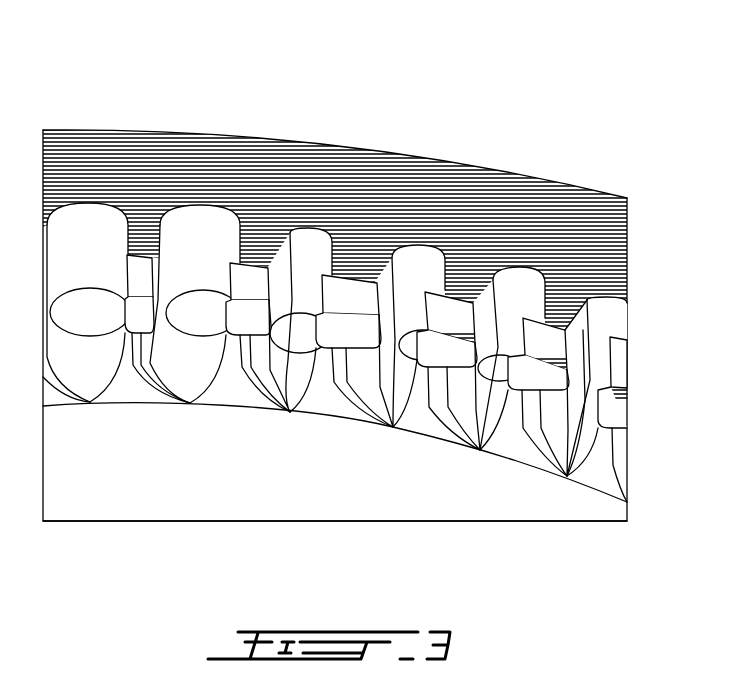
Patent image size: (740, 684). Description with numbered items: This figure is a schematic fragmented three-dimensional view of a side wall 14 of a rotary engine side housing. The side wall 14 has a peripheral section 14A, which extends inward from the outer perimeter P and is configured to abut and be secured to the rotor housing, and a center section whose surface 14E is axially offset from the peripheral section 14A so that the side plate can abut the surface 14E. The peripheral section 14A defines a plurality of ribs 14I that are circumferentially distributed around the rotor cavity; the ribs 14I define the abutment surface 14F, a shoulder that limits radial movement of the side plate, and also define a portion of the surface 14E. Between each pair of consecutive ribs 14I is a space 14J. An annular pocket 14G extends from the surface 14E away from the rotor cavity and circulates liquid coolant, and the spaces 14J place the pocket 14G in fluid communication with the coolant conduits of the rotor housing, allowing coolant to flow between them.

The side wall 14 is at (346, 312).
The peripheral section 14A is at (318, 190).
The ribs 14I is at (142, 244).
The abutment surface 14F is at (353, 296).
The surface of the center section 14E is at (342, 337).
The pocket 14G is at (435, 488).
The spaces 14J is at (535, 268).
The outer perimeter P is at (557, 186).